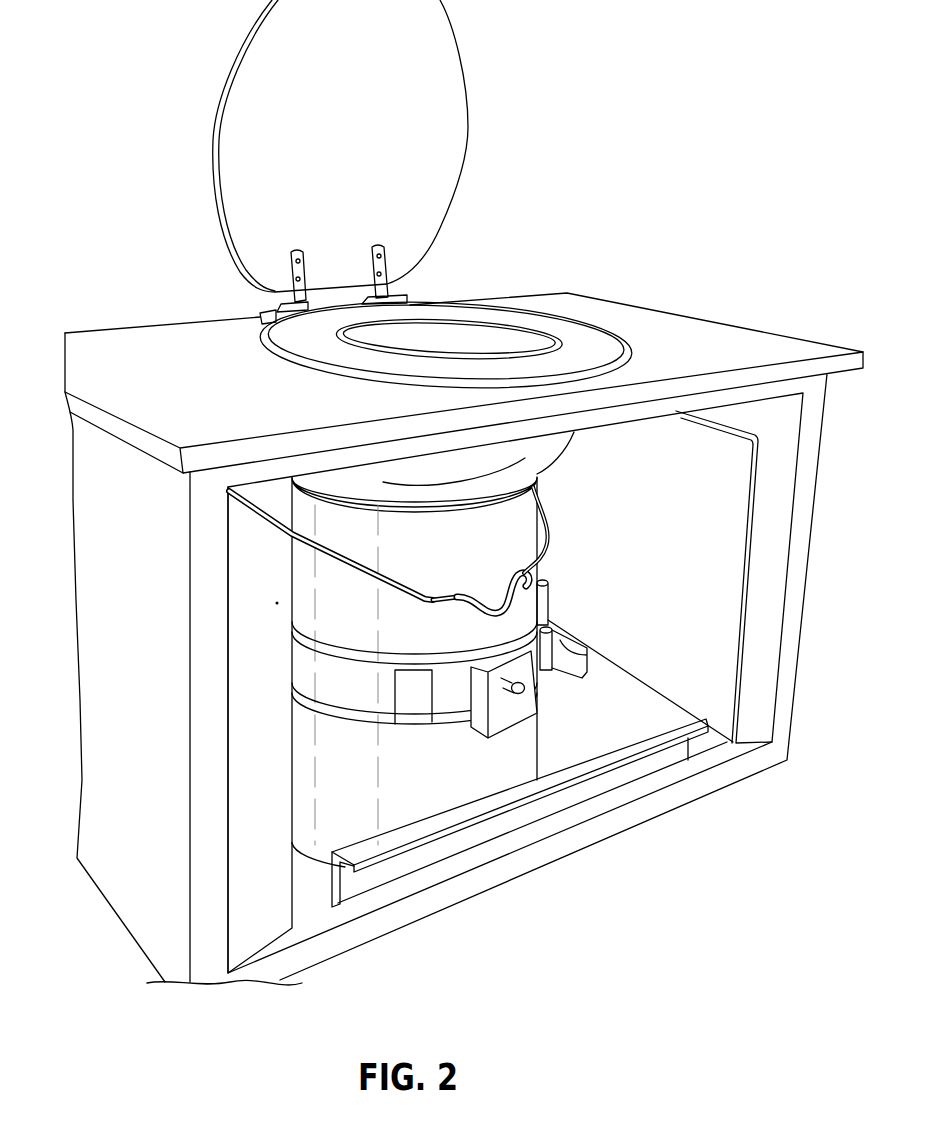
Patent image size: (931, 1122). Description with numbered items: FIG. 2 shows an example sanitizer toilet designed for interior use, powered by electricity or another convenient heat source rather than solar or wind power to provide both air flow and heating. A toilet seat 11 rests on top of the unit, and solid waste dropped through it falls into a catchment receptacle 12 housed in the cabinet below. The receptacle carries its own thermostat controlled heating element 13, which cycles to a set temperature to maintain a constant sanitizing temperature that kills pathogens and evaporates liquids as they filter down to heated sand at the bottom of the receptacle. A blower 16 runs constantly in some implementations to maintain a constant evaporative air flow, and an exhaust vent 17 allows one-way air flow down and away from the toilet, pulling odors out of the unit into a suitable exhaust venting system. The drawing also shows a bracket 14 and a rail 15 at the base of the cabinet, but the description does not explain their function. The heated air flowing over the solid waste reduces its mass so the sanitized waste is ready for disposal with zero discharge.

The toilet seat 11 is at (357, 149).
The catchment receptacle 12 is at (452, 540).
The heating element 13 is at (421, 707).
The guide bracket 14 is at (344, 862).
The guide rail 15 is at (522, 790).
The blower 16 is at (240, 590).
The exhaust vent 17 is at (654, 540).